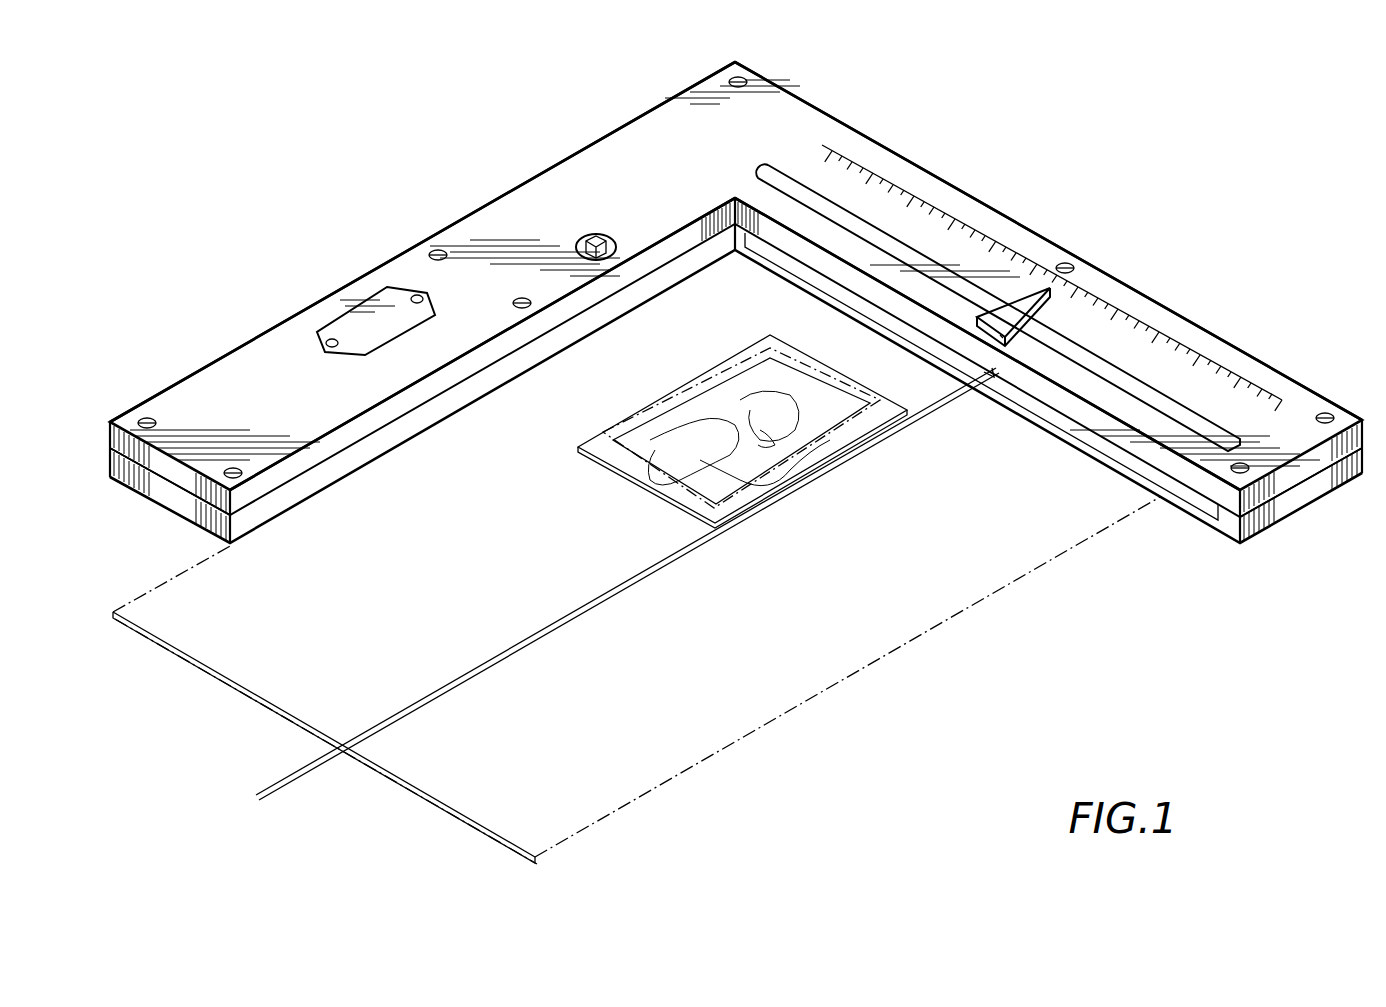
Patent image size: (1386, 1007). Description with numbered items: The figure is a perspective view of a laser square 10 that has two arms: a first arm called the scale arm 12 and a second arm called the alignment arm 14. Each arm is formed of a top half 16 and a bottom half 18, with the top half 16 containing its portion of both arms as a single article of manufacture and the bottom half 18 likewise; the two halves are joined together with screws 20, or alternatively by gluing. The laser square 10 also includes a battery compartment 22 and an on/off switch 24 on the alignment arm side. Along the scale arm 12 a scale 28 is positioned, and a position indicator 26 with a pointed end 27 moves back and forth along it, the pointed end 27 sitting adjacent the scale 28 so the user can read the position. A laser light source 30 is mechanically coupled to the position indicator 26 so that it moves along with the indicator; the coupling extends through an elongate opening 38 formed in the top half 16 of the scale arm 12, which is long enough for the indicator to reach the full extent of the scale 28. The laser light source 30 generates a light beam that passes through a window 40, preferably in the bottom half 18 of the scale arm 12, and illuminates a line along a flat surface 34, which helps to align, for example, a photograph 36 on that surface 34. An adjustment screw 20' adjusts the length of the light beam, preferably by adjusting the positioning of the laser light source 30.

The laser square 10 is at (445, 188).
The scale arm 12 is at (1308, 405).
The alignment arm 14 is at (620, 150).
The top half 16 is at (126, 440).
The bottom half 18 is at (142, 485).
The screws 20 is at (736, 305).
The adjustment screw 20' is at (1076, 222).
The battery compartment 22 is at (368, 325).
The on/off switch 24 is at (610, 255).
The position indicator 26 is at (1013, 335).
The pointed end 27 is at (1052, 288).
The scale 28 is at (780, 157).
The laser light source 30 is at (990, 380).
The flat surface 34 is at (855, 655).
The photograph 36 is at (640, 482).
The elongate opening 38 is at (1178, 400).
The window 40 is at (1172, 495).